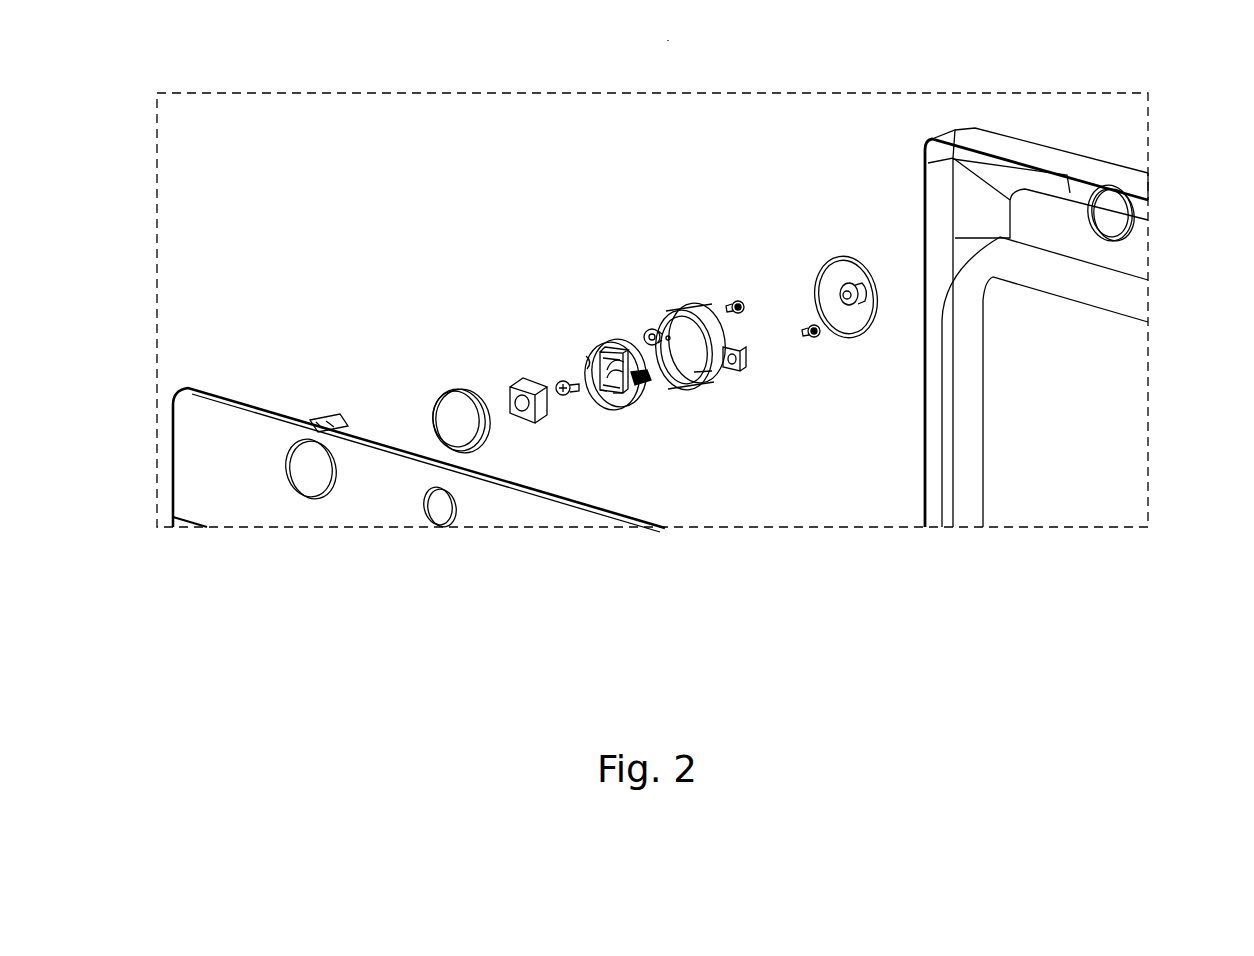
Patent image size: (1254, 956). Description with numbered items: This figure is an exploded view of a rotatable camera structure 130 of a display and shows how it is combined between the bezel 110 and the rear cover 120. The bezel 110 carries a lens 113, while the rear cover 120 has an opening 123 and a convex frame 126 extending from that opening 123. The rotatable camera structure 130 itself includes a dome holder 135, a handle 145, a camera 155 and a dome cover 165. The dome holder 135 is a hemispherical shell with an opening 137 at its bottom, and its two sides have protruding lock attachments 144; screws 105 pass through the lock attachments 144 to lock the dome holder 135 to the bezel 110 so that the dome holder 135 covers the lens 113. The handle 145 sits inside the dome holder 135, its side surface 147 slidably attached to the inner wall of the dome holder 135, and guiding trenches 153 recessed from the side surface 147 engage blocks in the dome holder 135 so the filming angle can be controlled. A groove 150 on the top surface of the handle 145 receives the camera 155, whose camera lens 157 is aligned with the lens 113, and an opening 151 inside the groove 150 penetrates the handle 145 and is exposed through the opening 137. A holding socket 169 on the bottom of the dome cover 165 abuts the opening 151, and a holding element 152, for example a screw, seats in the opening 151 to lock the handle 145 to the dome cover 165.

The screw 105 is at (737, 300).
The bezel 110 is at (188, 460).
The lens 113 is at (457, 445).
The rear cover 120 is at (1003, 148).
The opening 123 is at (1147, 200).
The convex frame 126 is at (1140, 220).
The rotatable camera structure 130 is at (837, 60).
The dome holder 135 is at (702, 310).
The opening 137 is at (742, 387).
The lock attachment 144 is at (747, 376).
The handle 145 is at (618, 345).
The side surface 147 is at (657, 383).
The groove 150 is at (602, 398).
The opening 151 is at (620, 397).
The holding element 152 is at (562, 400).
The guiding trench 153 is at (703, 372).
The camera 155 is at (537, 380).
The camera lens 157 is at (518, 420).
The dome cover 165 is at (847, 258).
The holding socket 169 is at (847, 307).